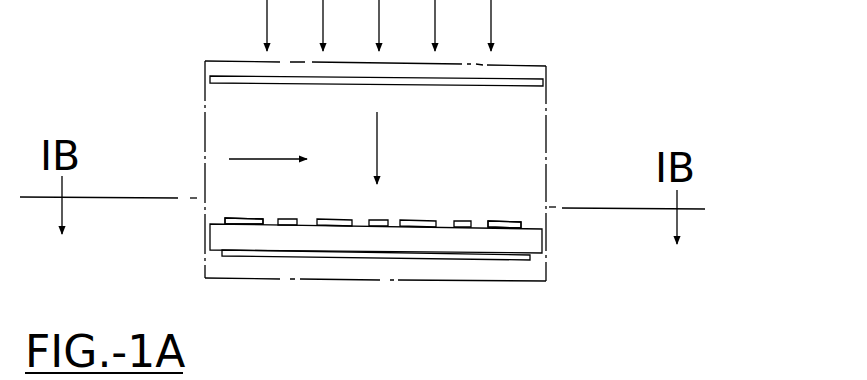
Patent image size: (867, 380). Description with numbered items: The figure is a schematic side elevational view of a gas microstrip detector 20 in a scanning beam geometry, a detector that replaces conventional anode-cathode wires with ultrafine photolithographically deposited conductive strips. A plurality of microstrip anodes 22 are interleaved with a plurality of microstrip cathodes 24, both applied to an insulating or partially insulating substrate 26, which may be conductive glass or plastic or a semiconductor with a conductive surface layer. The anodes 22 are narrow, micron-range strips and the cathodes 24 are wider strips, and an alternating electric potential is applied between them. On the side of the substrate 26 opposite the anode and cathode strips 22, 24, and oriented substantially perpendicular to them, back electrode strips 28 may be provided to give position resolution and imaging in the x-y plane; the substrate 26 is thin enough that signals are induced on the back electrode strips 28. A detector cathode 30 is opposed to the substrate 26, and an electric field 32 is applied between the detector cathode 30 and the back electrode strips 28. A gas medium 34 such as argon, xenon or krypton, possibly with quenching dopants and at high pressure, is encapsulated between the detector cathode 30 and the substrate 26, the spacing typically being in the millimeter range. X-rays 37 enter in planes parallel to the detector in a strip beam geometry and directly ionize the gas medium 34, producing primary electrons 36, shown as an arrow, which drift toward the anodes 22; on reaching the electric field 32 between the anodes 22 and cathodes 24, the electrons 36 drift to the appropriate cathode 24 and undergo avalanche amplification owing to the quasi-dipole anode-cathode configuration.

The gas microstrip detector 20 is at (184, 84).
The microstrip anodes 22 is at (294, 219).
The microstrip cathodes 24 is at (245, 219).
The substrate 26 is at (376, 253).
The back electrode strips 28 is at (426, 258).
The detector cathode 30 is at (498, 86).
The electric field 32 is at (380, 141).
The gas medium 34 is at (492, 181).
The primary electrons 36 is at (262, 158).
The x-rays 37 is at (495, 22).